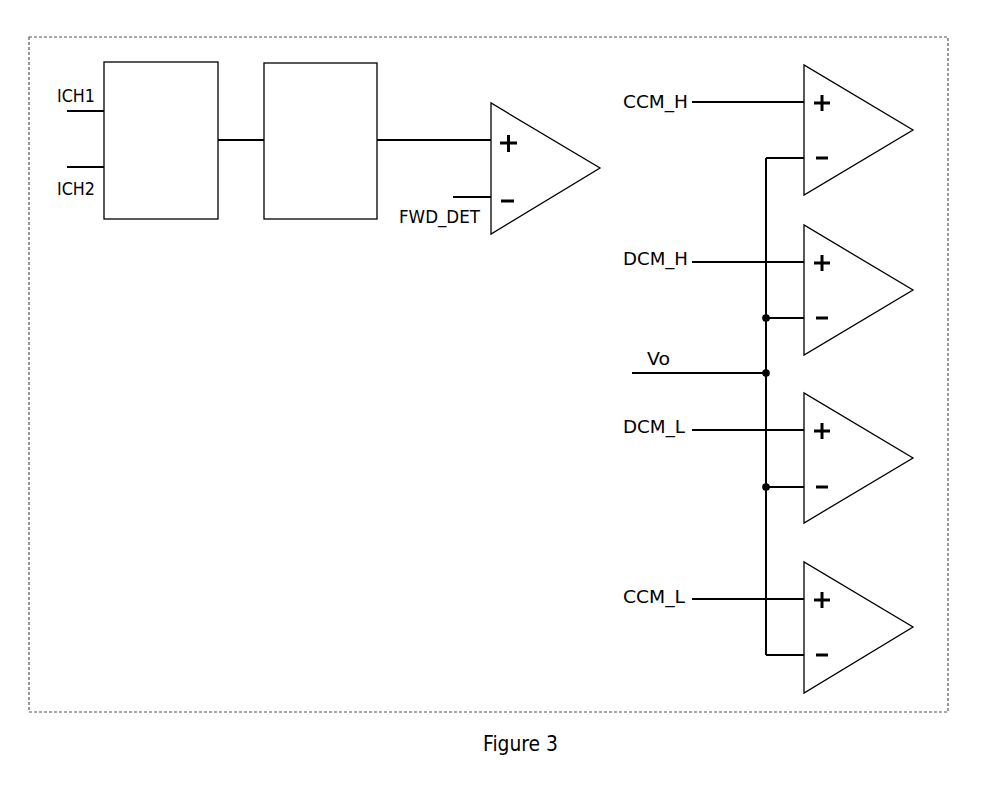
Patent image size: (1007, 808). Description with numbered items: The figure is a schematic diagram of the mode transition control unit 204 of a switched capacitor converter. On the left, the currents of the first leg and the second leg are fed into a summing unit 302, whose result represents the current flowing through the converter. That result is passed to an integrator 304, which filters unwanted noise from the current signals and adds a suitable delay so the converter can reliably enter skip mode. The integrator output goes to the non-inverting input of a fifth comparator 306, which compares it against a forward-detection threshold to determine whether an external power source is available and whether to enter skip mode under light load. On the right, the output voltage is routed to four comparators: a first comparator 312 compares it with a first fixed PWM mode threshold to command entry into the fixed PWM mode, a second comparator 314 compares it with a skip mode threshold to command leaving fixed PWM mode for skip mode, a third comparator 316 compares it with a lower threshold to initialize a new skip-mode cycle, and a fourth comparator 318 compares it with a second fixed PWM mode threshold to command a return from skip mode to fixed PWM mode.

The mode transition control unit 204 is at (110, 676).
The summing unit 302 is at (178, 192).
The integrator 304 is at (339, 181).
The fifth comparator 306 is at (553, 185).
The first comparator 312 is at (860, 148).
The second comparator 314 is at (860, 303).
The third comparator 316 is at (860, 475).
The fourth comparator 318 is at (860, 645).